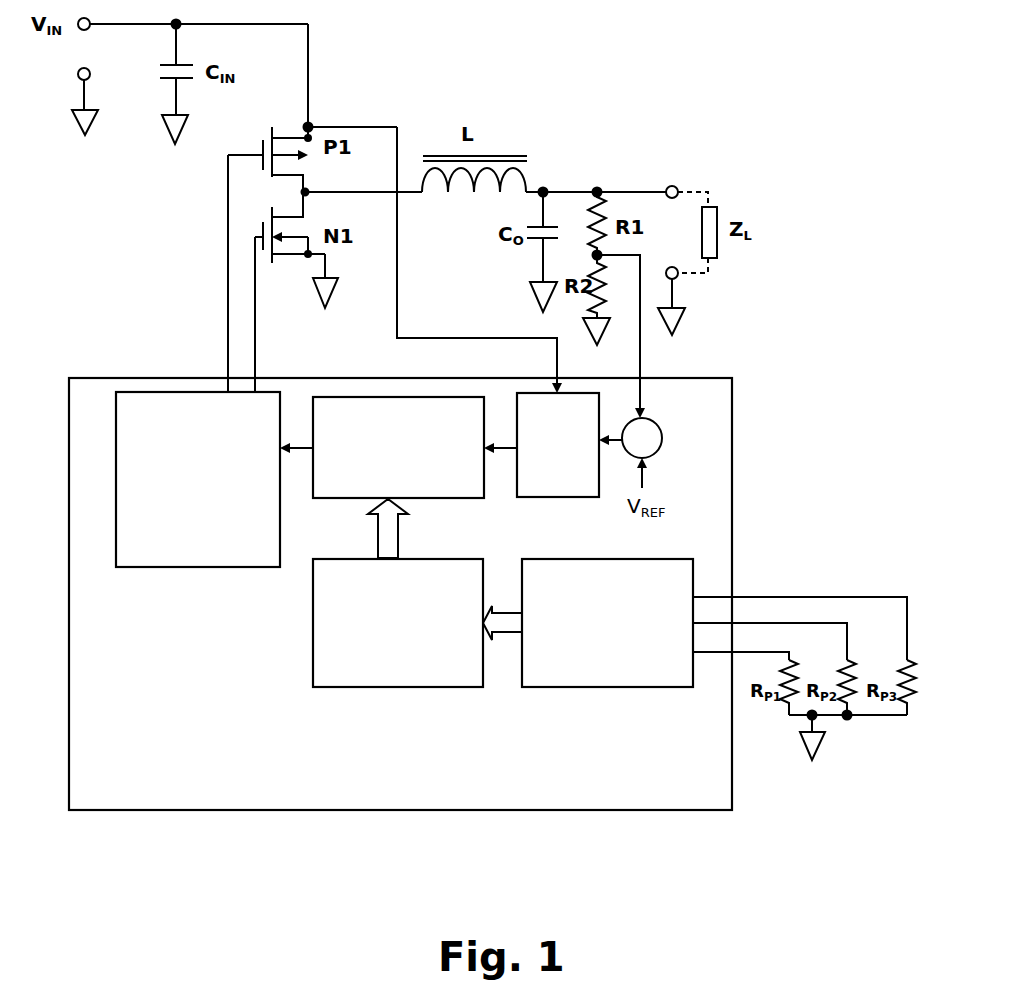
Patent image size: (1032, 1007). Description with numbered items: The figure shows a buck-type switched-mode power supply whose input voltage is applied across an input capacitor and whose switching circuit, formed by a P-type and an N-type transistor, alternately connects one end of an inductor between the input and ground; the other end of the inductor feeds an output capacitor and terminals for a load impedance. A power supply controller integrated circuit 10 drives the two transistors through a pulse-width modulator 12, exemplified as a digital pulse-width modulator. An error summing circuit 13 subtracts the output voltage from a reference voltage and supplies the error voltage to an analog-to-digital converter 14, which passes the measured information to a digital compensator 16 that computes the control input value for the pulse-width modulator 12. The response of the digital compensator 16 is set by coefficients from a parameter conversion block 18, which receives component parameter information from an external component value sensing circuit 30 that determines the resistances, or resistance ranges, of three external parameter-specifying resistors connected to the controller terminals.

The power supply controller integrated circuit 10 is at (374, 799).
The pulse-width modulator 12 is at (145, 534).
The error summing circuit 13 is at (662, 441).
The analog-to-digital converter 14 is at (562, 482).
The digital compensator 16 is at (357, 486).
The parameter conversion block 18 is at (462, 647).
The external component value sensing circuit 30 is at (675, 672).